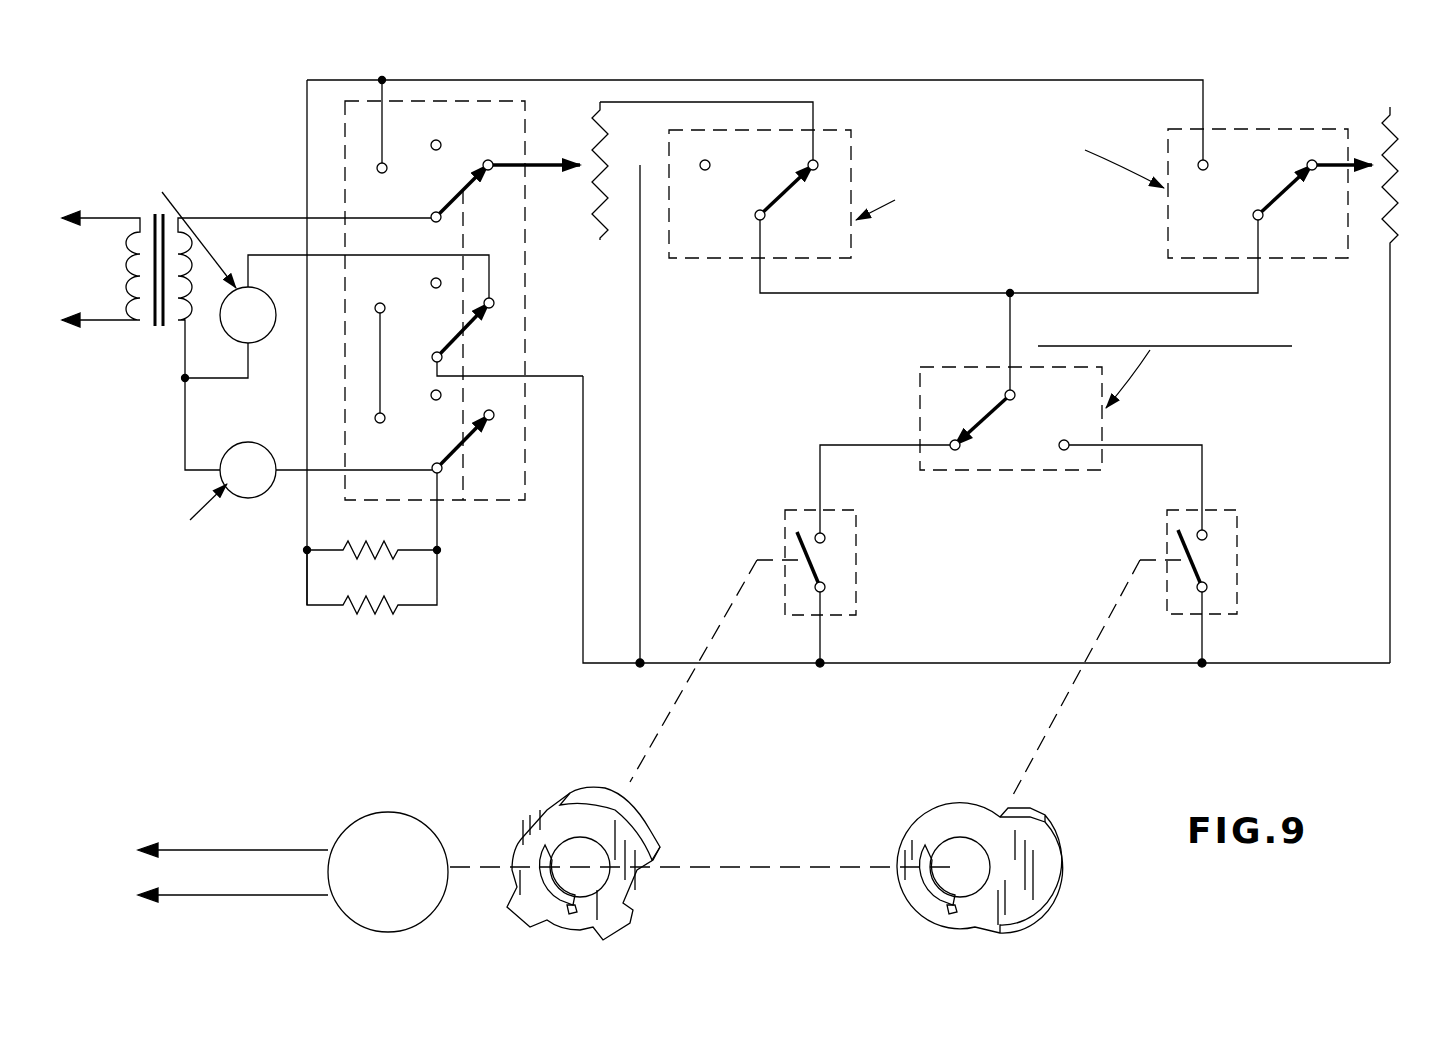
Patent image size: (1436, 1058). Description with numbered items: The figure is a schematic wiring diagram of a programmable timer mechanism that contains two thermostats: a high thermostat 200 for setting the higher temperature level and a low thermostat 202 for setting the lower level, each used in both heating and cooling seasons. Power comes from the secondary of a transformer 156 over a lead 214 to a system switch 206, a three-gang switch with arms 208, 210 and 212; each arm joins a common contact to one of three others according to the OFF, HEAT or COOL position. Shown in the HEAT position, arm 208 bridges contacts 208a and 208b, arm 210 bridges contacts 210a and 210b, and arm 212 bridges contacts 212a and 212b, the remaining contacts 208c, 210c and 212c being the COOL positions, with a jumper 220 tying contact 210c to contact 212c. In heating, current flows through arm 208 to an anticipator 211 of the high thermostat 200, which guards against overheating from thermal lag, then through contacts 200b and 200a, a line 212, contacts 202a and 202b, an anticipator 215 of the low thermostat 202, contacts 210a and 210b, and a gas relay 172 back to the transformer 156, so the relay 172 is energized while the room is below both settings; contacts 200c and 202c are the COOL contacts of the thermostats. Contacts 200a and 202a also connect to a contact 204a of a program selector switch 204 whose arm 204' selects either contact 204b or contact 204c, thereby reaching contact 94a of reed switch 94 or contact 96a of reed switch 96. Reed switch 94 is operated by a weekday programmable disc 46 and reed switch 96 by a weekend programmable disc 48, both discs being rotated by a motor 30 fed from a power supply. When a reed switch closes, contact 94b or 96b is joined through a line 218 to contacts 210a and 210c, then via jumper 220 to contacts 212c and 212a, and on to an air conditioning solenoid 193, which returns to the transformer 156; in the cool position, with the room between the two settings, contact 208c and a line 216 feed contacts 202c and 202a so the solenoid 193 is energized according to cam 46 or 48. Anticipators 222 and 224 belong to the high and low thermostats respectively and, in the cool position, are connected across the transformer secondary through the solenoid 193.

The system switch 206 is at (456, 98).
The switch arm 208 is at (455, 200).
The contact 208a is at (431, 220).
The contact 208b is at (494, 160).
The contact 208c is at (378, 163).
The switch arm 210 is at (448, 342).
The contact 210a is at (443, 357).
The contact 210b is at (495, 303).
The contact 210c is at (377, 302).
The switch arm 212 is at (448, 457).
The contact 212a is at (444, 471).
The contact 212b is at (495, 413).
The contact 212c is at (382, 424).
The lead 214 is at (290, 218).
The line 216 is at (893, 80).
The line 218 is at (583, 555).
The jumper 220 is at (381, 382).
The anticipator 222 is at (347, 550).
The anticipator 224 is at (360, 608).
The anticipator 211 is at (593, 200).
The anticipator 215 is at (1386, 113).
The high thermostat 200 is at (852, 160).
The contact 200a is at (755, 220).
The contact 200b is at (815, 171).
The contact 200c is at (705, 171).
The low thermostat 202 is at (1183, 231).
The contact 202a is at (1254, 220).
The contact 202b is at (1313, 171).
The contact 202c is at (1204, 171).
The program selector switch 204 is at (1067, 381).
The arm 204' is at (1004, 420).
The contact 204a is at (1005, 386).
The contact 204b is at (957, 451).
The contact 204c is at (1066, 451).
The reed switch 94 is at (790, 508).
The contact 94a is at (826, 538).
The contact 94b is at (826, 589).
The reed switch 96 is at (1166, 527).
The contact 96a is at (1208, 535).
The contact 96b is at (1208, 590).
The transformer 156 is at (150, 326).
The gas relay 172 is at (256, 330).
The air conditioning solenoid 193 is at (253, 456).
The motor 30 is at (388, 830).
The weekday programmable disc 46 is at (615, 828).
The weekend programmable disc 48 is at (940, 830).